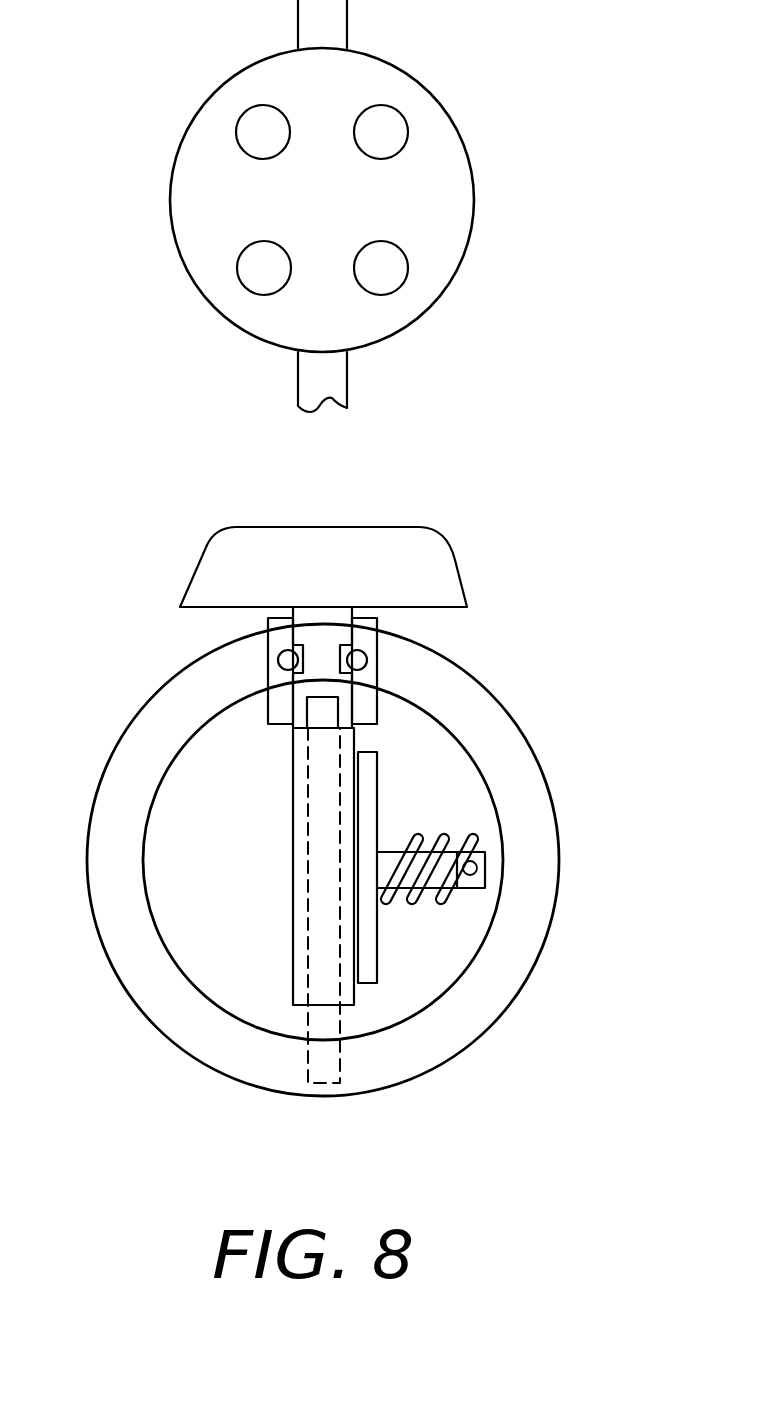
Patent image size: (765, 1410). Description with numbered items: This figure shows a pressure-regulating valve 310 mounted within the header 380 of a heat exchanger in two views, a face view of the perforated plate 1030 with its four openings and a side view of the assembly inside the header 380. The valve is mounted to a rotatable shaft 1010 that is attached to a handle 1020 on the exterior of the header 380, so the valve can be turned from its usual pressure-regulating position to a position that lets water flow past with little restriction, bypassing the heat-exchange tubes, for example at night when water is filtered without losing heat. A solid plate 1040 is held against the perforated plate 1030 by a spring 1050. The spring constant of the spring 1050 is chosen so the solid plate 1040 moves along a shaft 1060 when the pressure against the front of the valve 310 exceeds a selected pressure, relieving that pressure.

The pressure-regulating valve 310 is at (505, 160).
The header 380 is at (548, 945).
The rotatable shaft 1010 is at (320, 807).
The handle 1020 is at (460, 572).
The perforated plate 1030 is at (185, 265).
The solid plate 1040 is at (367, 987).
The spring 1050 is at (442, 907).
The shaft 1060 is at (487, 875).